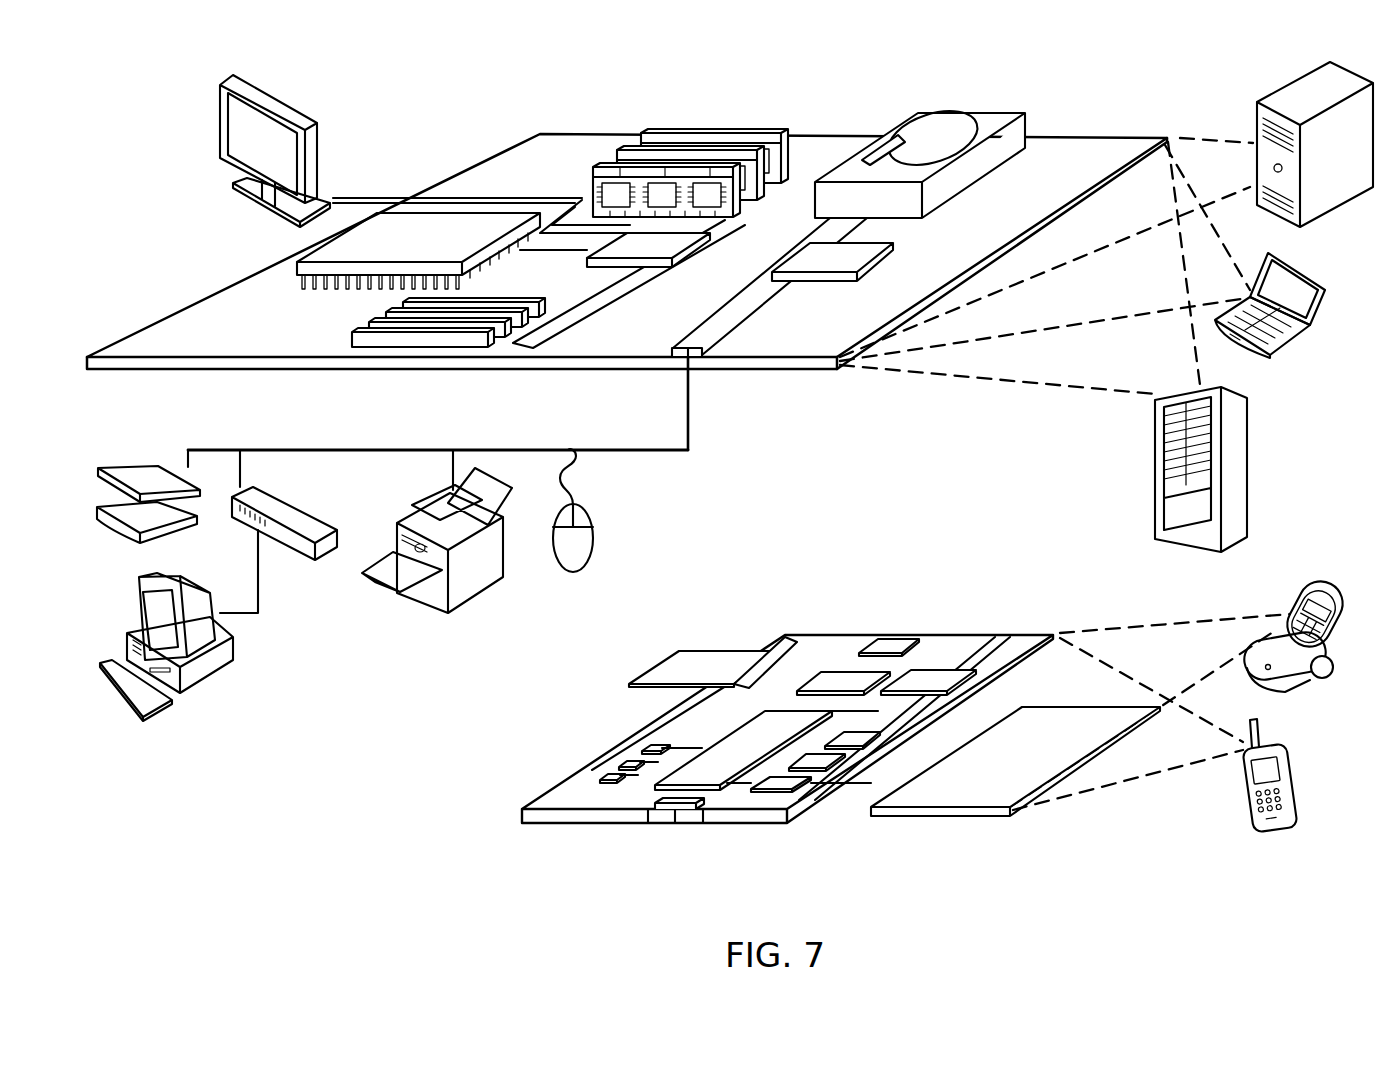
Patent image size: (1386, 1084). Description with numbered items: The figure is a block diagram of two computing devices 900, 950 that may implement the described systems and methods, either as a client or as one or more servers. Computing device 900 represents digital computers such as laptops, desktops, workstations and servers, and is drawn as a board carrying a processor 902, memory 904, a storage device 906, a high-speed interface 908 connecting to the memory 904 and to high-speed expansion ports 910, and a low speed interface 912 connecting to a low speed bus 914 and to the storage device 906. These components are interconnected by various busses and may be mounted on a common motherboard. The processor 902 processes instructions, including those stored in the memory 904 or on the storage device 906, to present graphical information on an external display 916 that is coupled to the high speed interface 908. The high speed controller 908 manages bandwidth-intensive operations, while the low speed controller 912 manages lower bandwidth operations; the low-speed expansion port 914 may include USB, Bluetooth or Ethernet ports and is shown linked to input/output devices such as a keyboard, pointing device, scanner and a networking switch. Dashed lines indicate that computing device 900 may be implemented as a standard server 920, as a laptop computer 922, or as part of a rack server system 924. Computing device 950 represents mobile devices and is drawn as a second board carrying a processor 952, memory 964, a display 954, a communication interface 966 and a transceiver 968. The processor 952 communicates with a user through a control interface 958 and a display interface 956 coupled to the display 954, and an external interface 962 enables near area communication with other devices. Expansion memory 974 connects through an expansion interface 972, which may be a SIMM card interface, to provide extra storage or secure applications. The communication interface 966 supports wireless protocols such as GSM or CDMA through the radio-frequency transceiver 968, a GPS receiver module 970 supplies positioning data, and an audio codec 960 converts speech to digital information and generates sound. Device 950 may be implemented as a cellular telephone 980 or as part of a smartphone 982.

The computing device 900 is at (670, 427).
The processor 902 is at (297, 265).
The memory 904 is at (655, 123).
The storage device 906 is at (917, 115).
The high-speed interface 908 is at (622, 250).
The high-speed expansion ports 910 is at (352, 332).
The low speed interface 912 is at (812, 252).
The low speed bus 914 is at (700, 362).
The display 916 is at (228, 80).
The standard server 920 is at (1256, 125).
The laptop computer 922 is at (1327, 283).
The rack server system 924 is at (1155, 494).
The computing device 950 is at (492, 826).
The processor 952 is at (715, 777).
The display 954 is at (971, 795).
The display interface 956 is at (792, 789).
The control interface 958 is at (823, 762).
The audio codec 960 is at (852, 740).
The external interface 962 is at (674, 816).
The memory 964 is at (614, 765).
The communication interface 966 is at (844, 675).
The transceiver 968 is at (928, 673).
The GPS receiver module 970 is at (902, 641).
The expansion interface 972 is at (771, 649).
The expansion memory 974 is at (680, 651).
The cellular telephone 980 is at (1306, 586).
The smartphone 982 is at (1243, 782).